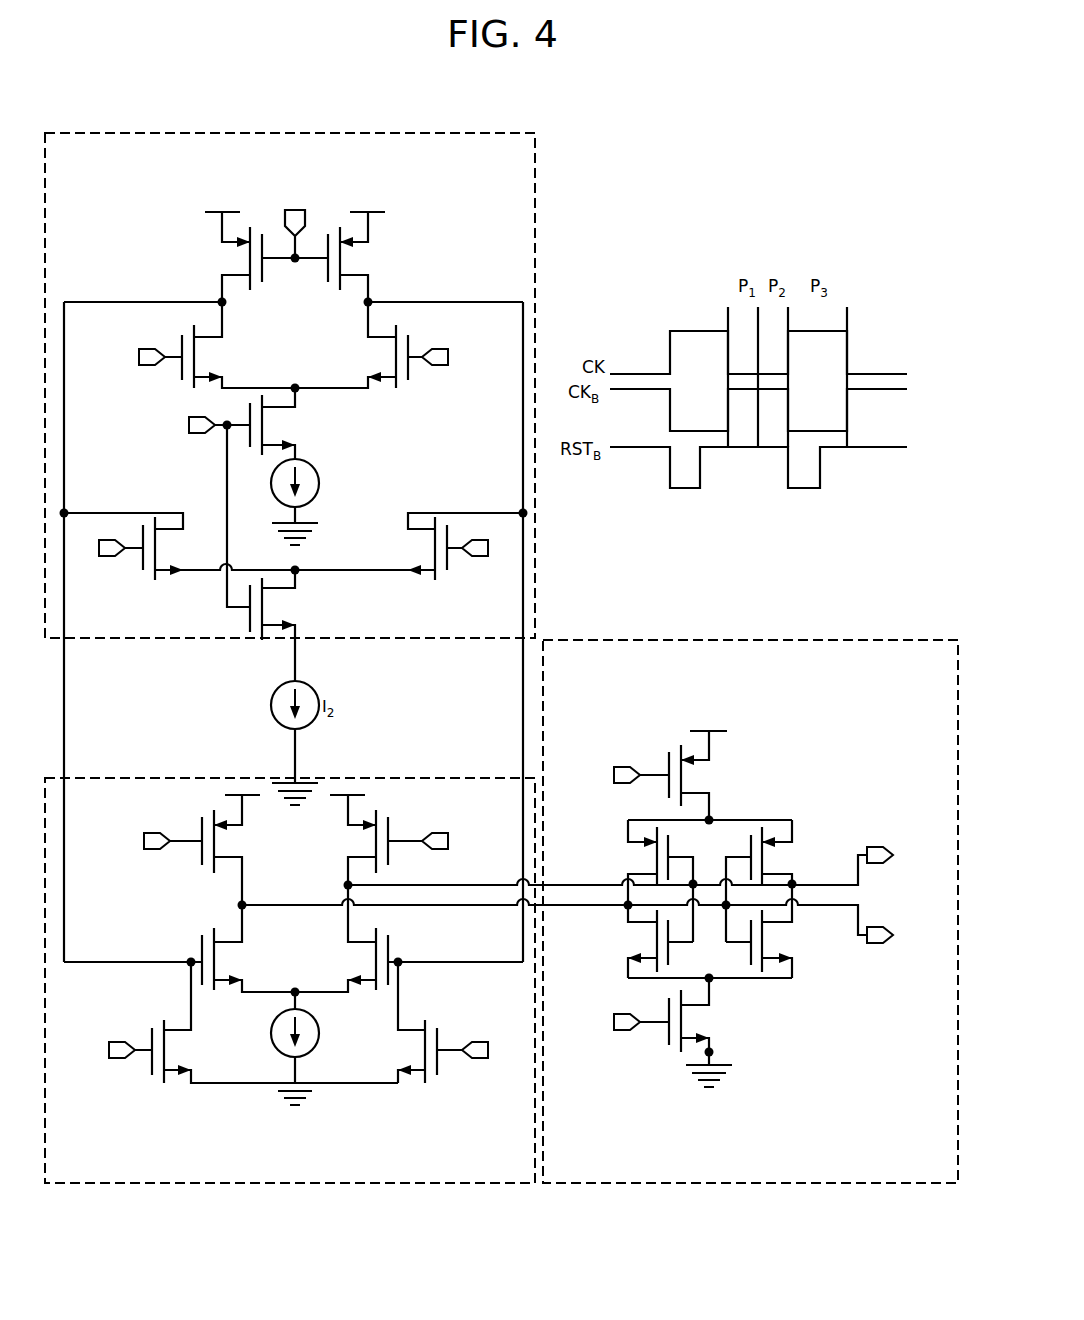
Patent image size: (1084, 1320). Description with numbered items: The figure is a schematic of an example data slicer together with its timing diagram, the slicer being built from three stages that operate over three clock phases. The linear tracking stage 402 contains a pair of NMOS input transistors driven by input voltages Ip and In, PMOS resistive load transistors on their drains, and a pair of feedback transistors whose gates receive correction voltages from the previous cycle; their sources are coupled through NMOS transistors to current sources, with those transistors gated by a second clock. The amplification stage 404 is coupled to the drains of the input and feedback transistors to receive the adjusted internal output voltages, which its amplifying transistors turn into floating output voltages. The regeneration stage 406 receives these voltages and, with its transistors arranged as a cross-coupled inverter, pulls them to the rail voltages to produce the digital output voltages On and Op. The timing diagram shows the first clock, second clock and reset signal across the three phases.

The linear tracking stage 402 is at (437, 133).
The amplification stage 404 is at (290, 1184).
The regeneration stage 406 is at (752, 1184).